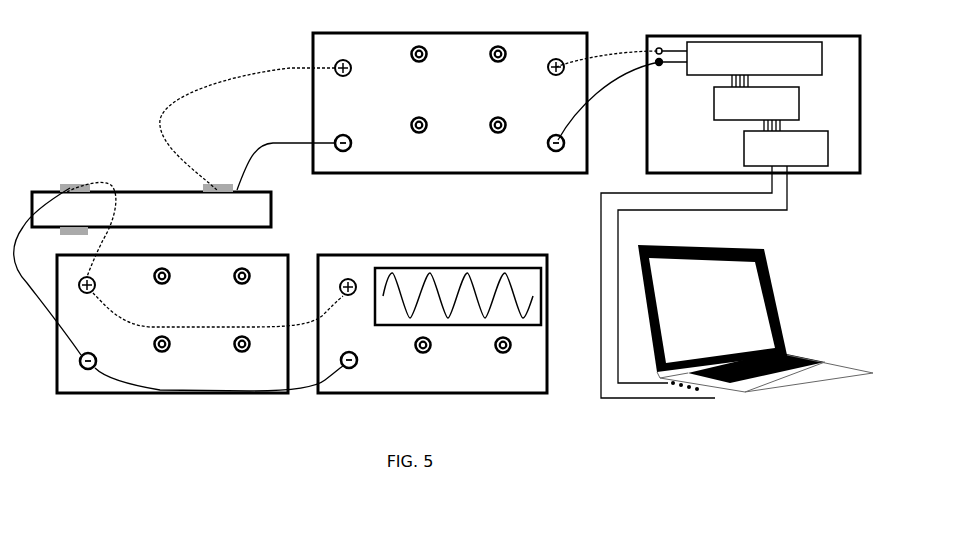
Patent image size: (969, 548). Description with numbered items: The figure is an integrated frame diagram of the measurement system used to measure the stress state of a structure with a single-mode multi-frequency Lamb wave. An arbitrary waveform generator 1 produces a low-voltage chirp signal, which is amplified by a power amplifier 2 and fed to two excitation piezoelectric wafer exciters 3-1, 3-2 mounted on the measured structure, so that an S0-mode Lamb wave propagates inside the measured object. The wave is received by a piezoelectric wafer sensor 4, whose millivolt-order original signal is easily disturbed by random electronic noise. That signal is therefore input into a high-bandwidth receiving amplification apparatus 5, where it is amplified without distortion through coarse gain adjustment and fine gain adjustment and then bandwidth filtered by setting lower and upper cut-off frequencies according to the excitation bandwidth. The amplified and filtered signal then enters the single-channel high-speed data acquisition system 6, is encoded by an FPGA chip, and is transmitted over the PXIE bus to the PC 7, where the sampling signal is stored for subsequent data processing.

The arbitrary waveform generator 1 is at (432, 308).
The power amplifier 2 is at (200, 312).
The piezoelectric wafer exciter 3-1 is at (151, 216).
The piezoelectric wafer exciter 3-2 is at (51, 271).
The piezoelectric wafer sensor 4 is at (247, 129).
The high-bandwidth receiving amplification apparatus 5 is at (450, 92).
The single-channel high-speed data acquisition system 6 is at (708, 204).
The PC 7 is at (755, 318).